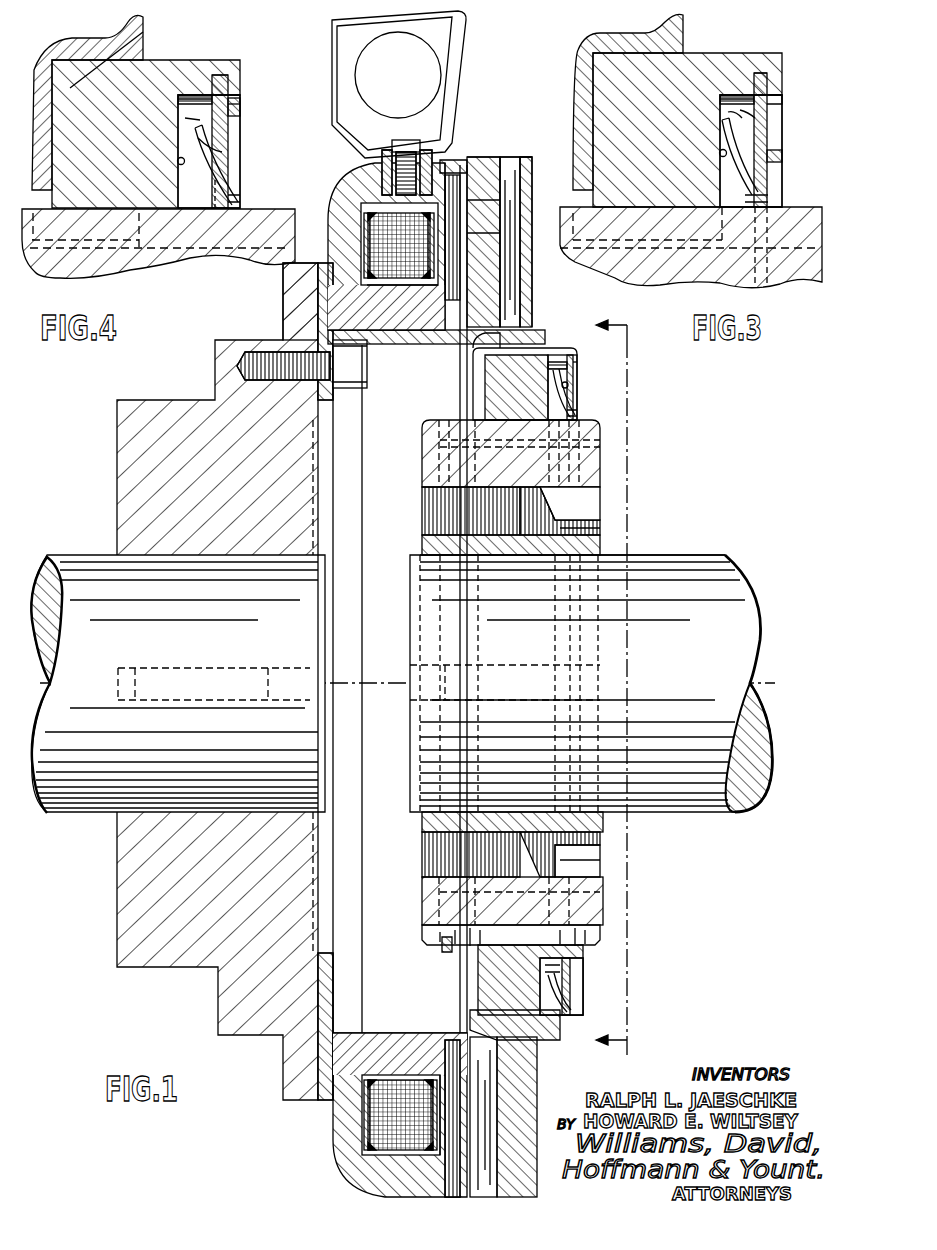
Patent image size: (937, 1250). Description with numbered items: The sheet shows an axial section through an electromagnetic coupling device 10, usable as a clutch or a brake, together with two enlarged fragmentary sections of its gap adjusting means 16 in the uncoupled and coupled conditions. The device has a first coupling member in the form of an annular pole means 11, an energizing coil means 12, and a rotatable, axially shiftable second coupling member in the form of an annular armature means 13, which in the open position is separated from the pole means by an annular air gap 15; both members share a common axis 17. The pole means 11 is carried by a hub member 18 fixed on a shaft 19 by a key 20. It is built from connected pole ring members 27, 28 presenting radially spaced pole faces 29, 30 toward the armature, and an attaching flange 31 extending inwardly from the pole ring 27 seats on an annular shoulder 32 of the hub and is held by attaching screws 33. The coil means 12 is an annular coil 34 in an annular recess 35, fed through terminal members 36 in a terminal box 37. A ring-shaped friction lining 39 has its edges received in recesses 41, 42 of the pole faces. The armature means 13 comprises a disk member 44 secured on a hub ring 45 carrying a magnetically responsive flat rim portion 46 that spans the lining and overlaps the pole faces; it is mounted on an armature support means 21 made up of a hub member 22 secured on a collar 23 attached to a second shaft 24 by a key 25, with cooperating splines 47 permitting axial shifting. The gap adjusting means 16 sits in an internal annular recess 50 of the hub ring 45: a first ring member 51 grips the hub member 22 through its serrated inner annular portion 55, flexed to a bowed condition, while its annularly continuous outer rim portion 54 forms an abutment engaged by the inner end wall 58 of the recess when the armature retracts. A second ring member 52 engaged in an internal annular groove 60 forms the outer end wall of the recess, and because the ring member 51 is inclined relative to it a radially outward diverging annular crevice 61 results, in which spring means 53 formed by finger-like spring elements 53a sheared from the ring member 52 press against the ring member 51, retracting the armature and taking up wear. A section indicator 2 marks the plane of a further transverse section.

In FIG. 1, the coupling device 10 is at (360, 176).
In FIG. 1, the pole means 11 is at (460, 164).
In FIG. 1, the energizing coil means 12 is at (410, 337).
In FIG. 4, the armature means 13 is at (145, 30).
In FIG. 3, the armature means 13 is at (658, 27).
In FIG. 1, the armature means 13 is at (526, 174).
In FIG. 1, the air gap 15 is at (463, 160).
In FIG. 4, the gap adjusting means 16 is at (240, 104).
In FIG. 3, the gap adjusting means 16 is at (770, 95).
In FIG. 1, the gap adjusting means 16 is at (577, 381).
In FIG. 1, the common axis 17 is at (650, 682).
In FIG. 1, the hub member 18 is at (262, 340).
In FIG. 1, the shaft 19 is at (84, 556).
In FIG. 1, the key 20 is at (173, 676).
In FIG. 1, the armature support means 21 is at (583, 502).
In FIG. 4, the hub member 22 is at (268, 224).
In FIG. 3, the hub member 22 is at (790, 212).
In FIG. 1, the hub member 22 is at (578, 467).
In FIG. 1, the collar 23 is at (606, 547).
In FIG. 1, the shaft 24 is at (675, 557).
In FIG. 1, the key 25 is at (488, 676).
In FIG. 1, the pole ring member 27 is at (358, 202).
In FIG. 1, the pole ring member 28 is at (410, 290).
In FIG. 1, the pole face 29 is at (470, 172).
In FIG. 1, the pole face 30 is at (505, 312).
In FIG. 1, the attaching flange 31 is at (298, 292).
In FIG. 1, the annular shoulder 32 is at (318, 404).
In FIG. 1, the attaching screws 33 is at (368, 382).
In FIG. 1, the annular coil 34 is at (370, 252).
In FIG. 1, the annular recess 35 is at (361, 227).
In FIG. 1, the terminal members 36 is at (440, 117).
In FIG. 1, the terminal box 37 is at (460, 57).
In FIG. 1, the friction lining 39 is at (478, 204).
In FIG. 1, the annular recess 41 is at (418, 145).
In FIG. 1, the annular recess 42 is at (450, 307).
In FIG. 1, the disk member 44 is at (518, 281).
In FIG. 4, the hub ring 45 is at (175, 62).
In FIG. 3, the hub ring 45 is at (702, 55).
In FIG. 1, the hub ring 45 is at (530, 349).
In FIG. 1, the flat rim portion 46 is at (487, 237).
In FIG. 4, the splines 47 is at (132, 258).
In FIG. 1, the splines 47 is at (480, 444).
In FIG. 4, the internal annular recess 50 is at (200, 95).
In FIG. 3, the internal annular recess 50 is at (735, 92).
In FIG. 1, the internal annular recess 50 is at (553, 360).
In FIG. 4, the first ring member 51 is at (205, 172).
In FIG. 3, the first ring member 51 is at (730, 132).
In FIG. 1, the first ring member 51 is at (562, 394).
In FIG. 4, the second ring member 52 is at (225, 95).
In FIG. 3, the second ring member 52 is at (765, 128).
In FIG. 1, the second ring member 52 is at (573, 370).
In FIG. 4, the spring means 53 is at (178, 99).
In FIG. 3, the spring means 53 is at (720, 98).
In FIG. 1, the spring means 53 is at (548, 366).
In FIG. 4, the spring elements 53a is at (236, 112).
In FIG. 3, the spring elements 53a is at (775, 156).
In FIG. 4, the outer rim portion 54 is at (200, 120).
In FIG. 3, the outer rim portion 54 is at (742, 118).
In FIG. 4, the serrated inner annular portion 55 is at (238, 195).
In FIG. 3, the serrated inner annular portion 55 is at (745, 198).
In FIG. 1, the serrated inner annular portion 55 is at (575, 417).
In FIG. 4, the inner end wall 58 is at (178, 161).
In FIG. 3, the inner end wall 58 is at (720, 152).
In FIG. 4, the internal annular groove 60 is at (220, 75).
In FIG. 3, the internal annular groove 60 is at (765, 73).
In FIG. 4, the annular crevice 61 is at (198, 138).
In FIG. 3, the annular crevice 61 is at (755, 113).
In FIG. 1, the annular crevice 61 is at (568, 390).
In FIG. 1, the section line 2- 2 is at (621, 685).